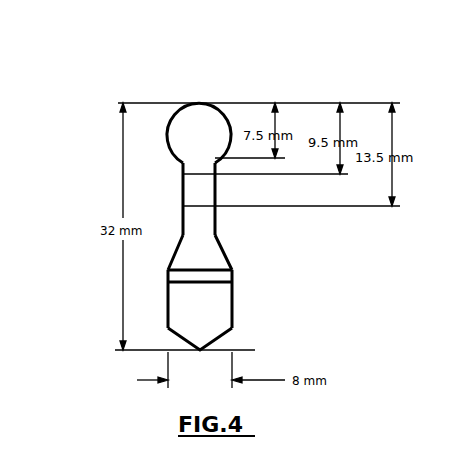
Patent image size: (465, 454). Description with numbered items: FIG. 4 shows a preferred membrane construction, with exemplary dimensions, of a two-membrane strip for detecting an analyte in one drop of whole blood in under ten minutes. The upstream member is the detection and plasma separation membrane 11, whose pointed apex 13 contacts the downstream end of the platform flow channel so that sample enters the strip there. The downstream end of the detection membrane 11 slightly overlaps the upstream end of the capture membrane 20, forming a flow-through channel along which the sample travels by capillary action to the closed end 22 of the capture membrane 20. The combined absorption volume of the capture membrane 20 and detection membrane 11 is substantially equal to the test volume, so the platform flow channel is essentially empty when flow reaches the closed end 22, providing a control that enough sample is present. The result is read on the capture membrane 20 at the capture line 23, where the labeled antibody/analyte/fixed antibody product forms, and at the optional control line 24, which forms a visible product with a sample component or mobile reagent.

The capture membrane 20 is at (195, 193).
The closed end 22 is at (198, 105).
The control line 24 is at (195, 175).
The capture line 23 is at (200, 207).
The detection membrane 11 is at (203, 307).
The apex 13 is at (205, 348).